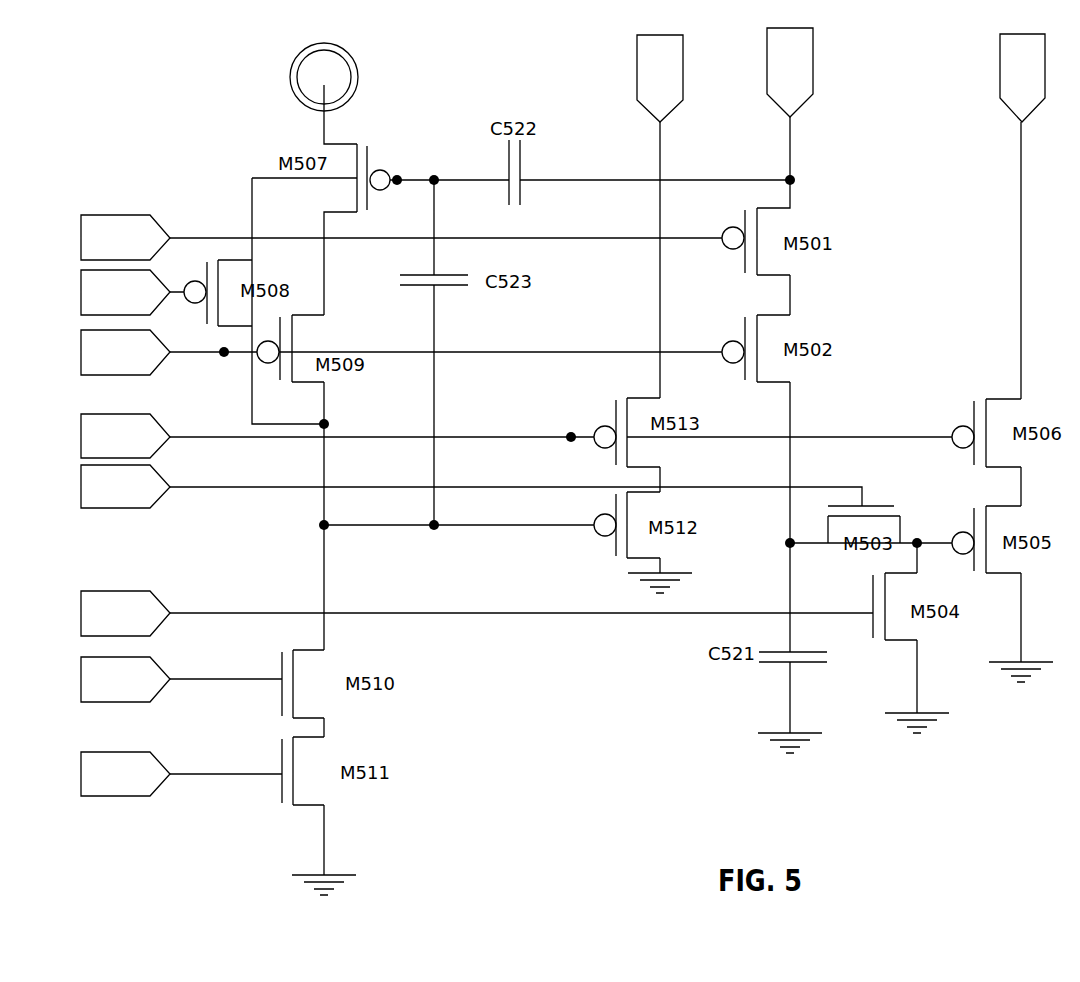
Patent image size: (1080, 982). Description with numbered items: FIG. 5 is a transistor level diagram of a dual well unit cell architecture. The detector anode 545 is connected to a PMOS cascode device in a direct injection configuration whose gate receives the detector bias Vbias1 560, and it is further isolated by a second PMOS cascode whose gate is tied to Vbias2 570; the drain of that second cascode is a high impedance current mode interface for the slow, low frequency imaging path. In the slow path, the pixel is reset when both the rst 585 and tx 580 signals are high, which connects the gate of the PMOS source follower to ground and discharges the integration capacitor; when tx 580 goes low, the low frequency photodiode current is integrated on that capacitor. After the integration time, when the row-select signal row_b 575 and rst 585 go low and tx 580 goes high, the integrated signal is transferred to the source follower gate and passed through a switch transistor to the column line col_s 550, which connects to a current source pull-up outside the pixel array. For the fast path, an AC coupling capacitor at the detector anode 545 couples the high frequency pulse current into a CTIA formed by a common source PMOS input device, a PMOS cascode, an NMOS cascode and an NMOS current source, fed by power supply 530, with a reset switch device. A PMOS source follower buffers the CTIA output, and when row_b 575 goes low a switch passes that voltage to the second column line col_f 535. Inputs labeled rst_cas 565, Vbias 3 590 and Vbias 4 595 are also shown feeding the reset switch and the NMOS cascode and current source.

The power supply 530 is at (306, 77).
The col_f column line 535 is at (650, 84).
The detector anode 545 is at (779, 77).
The col_s column line 550 is at (1002, 78).
The Vbias1 detector bias 560 is at (102, 237).
The reset cascode signal input rst_cas 565 is at (102, 292).
The Vbias2 bias 570 is at (102, 352).
The row_b row-select signal 575 is at (102, 436).
The tx signal 580 is at (102, 486).
The rst signal 585 is at (102, 613).
The third bias voltage input Vbias 3 590 is at (102, 679).
The fourth bias voltage input Vbias 4 595 is at (102, 774).